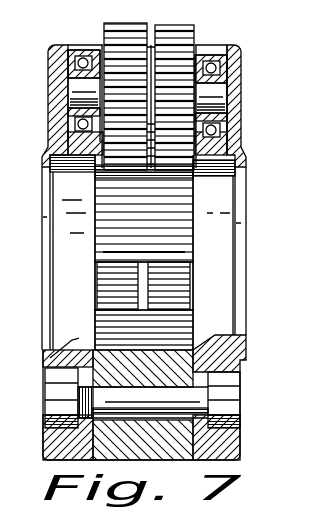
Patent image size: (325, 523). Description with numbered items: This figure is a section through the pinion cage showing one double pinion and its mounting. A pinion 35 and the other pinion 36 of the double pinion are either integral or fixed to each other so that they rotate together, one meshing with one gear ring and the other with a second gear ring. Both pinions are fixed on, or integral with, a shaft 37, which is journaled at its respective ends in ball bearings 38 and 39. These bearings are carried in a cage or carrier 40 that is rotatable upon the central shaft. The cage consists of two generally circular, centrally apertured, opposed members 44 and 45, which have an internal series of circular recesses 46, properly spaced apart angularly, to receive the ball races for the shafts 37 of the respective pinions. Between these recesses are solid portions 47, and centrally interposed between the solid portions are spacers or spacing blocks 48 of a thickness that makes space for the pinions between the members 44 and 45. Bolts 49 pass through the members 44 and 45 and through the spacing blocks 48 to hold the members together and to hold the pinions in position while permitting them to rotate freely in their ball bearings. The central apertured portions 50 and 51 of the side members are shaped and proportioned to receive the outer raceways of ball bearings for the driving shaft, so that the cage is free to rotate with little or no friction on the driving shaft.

The pinion 35 is at (112, 33).
The pinion 36 is at (182, 35).
The shaft 37 is at (232, 95).
The ball bearing 38 is at (78, 58).
The ball bearing 39 is at (222, 62).
The cage or carrier 40 is at (248, 161).
The opposed member 44 is at (54, 124).
The opposed member 45 is at (240, 126).
The circular recess 46 is at (71, 70).
The solid portion 47 is at (68, 342).
The spacer or spacing block 48 is at (170, 218).
The bolt 49 is at (230, 406).
The central apertured portion 50 is at (66, 187).
The central apertured portion 51 is at (225, 248).